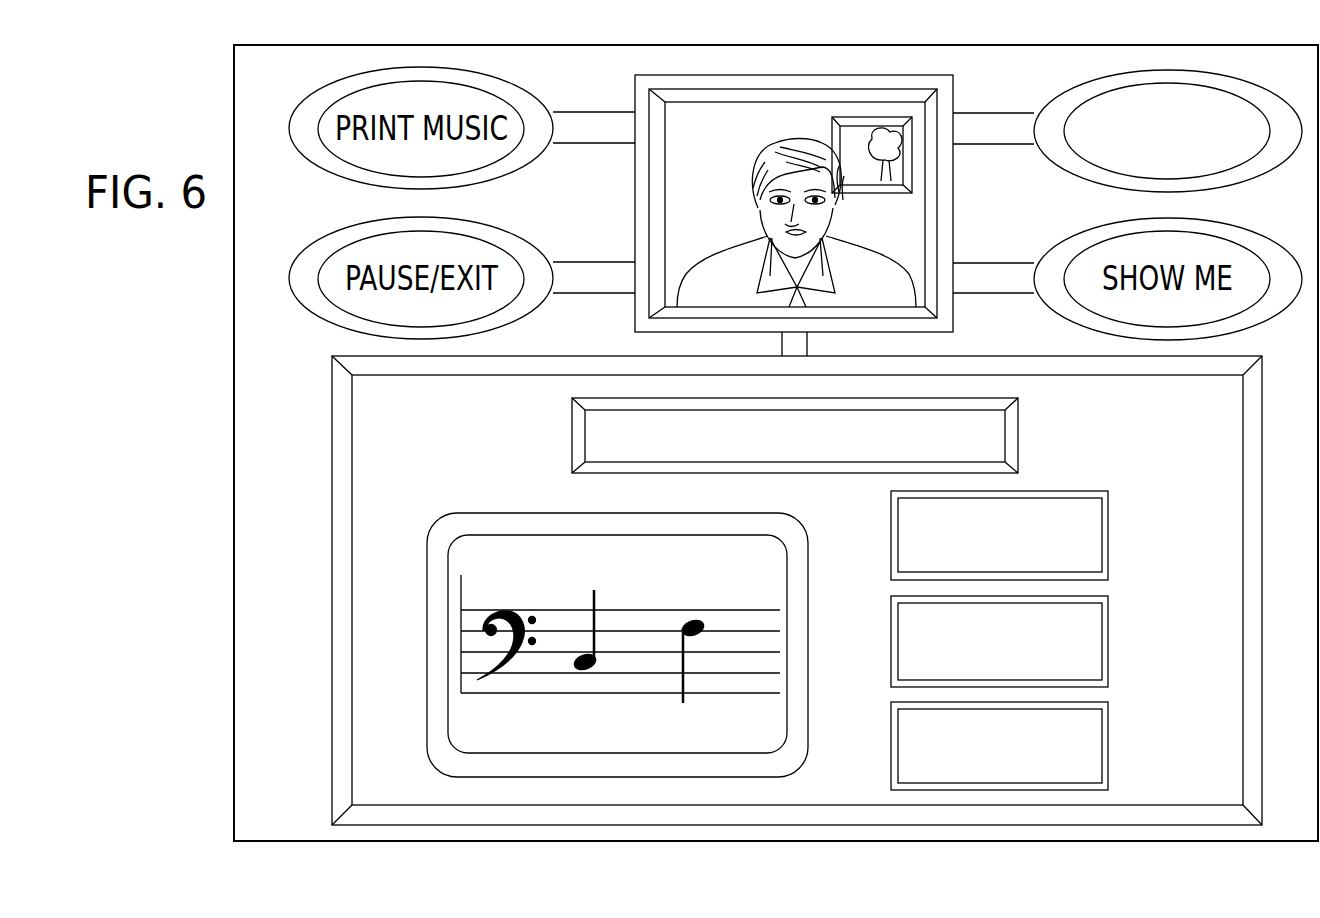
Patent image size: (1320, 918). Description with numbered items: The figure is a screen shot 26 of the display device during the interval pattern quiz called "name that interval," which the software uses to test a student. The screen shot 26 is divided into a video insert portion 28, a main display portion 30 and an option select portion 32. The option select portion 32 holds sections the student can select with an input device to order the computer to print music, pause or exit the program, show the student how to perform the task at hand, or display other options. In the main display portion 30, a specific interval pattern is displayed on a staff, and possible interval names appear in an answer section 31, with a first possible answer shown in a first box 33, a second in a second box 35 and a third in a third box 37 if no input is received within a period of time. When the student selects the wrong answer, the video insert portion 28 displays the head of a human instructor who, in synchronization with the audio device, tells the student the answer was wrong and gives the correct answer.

The screen shot 26 is at (230, 594).
The video insert portion 28 is at (839, 78).
The main display portion 30 is at (797, 622).
The answer section 31 is at (1047, 635).
The option select portion 32 is at (1069, 73).
The first box 33 is at (1083, 542).
The second box 35 is at (1083, 643).
The third box 37 is at (1083, 750).